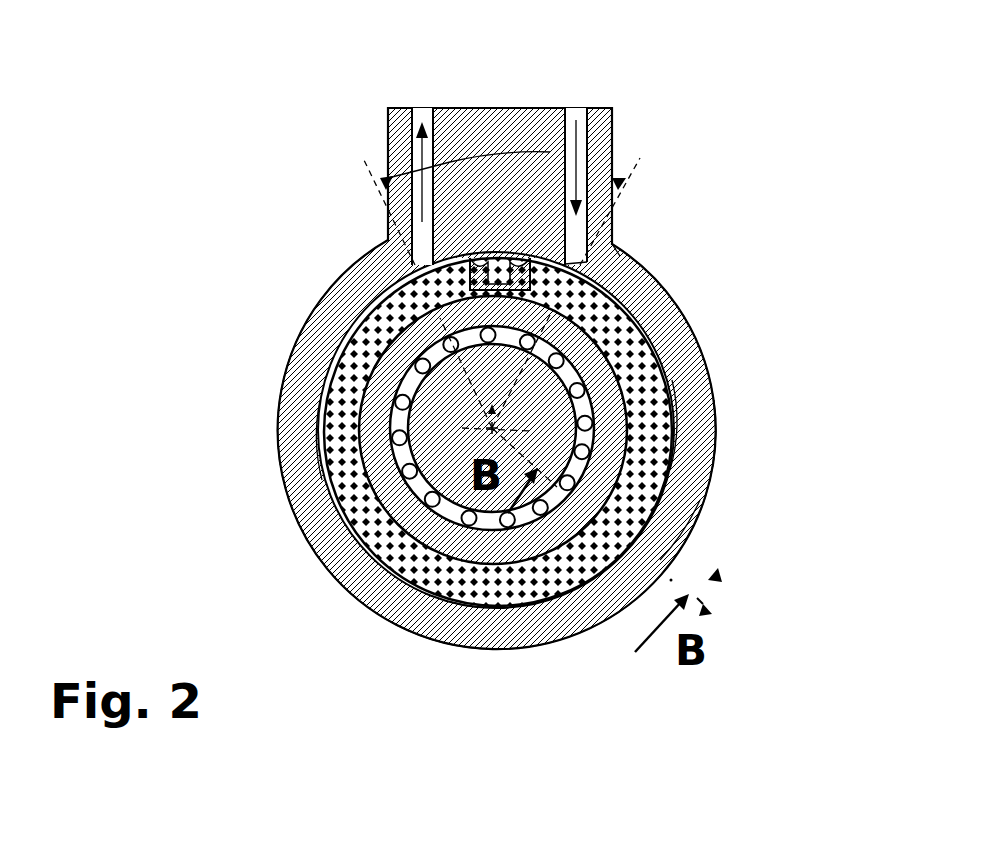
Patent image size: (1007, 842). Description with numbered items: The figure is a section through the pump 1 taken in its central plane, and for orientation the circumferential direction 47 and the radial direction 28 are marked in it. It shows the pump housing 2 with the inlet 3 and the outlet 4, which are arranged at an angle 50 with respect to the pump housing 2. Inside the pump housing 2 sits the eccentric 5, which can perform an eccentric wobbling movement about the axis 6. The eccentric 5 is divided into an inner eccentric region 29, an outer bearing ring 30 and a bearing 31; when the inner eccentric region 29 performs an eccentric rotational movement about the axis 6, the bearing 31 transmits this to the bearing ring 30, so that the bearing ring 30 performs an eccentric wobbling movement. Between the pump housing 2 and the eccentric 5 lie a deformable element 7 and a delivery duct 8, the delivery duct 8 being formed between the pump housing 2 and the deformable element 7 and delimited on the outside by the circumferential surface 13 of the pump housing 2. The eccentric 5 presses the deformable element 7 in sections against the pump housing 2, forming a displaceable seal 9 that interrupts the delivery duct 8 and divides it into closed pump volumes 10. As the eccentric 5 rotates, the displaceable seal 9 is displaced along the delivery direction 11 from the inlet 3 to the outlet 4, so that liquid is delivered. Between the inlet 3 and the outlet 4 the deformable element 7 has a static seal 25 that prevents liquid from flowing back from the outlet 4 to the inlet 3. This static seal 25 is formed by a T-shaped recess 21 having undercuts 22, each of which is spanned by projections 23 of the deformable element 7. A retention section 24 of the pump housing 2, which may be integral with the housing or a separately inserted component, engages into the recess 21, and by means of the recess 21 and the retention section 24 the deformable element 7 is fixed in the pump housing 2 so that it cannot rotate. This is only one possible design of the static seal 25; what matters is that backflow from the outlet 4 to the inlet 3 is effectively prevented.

The pump 1 is at (312, 216).
The pump housing 2 is at (576, 612).
The inlet 3 is at (578, 107).
The outlet 4 is at (422, 107).
The eccentric 5 is at (490, 555).
The axis 6 is at (605, 365).
The deformable element 7 is at (345, 522).
The delivery duct 8 is at (672, 427).
The displaceable seal 9 is at (492, 607).
The closed pump volumes 10 is at (678, 478).
The delivery direction 11 is at (412, 148).
The circumferential surface 13 is at (338, 360).
The recess 21 is at (390, 238).
The undercuts 22 is at (616, 257).
The projections 23 is at (388, 237).
The retention section 24 is at (496, 256).
The static seal 25 is at (548, 262).
The radial direction 28 is at (683, 588).
The inner eccentric region 29 is at (497, 423).
The bearing ring 30 is at (673, 403).
The bearing 31 is at (558, 415).
The circumferential direction 47 is at (708, 588).
The angle 50 is at (550, 152).